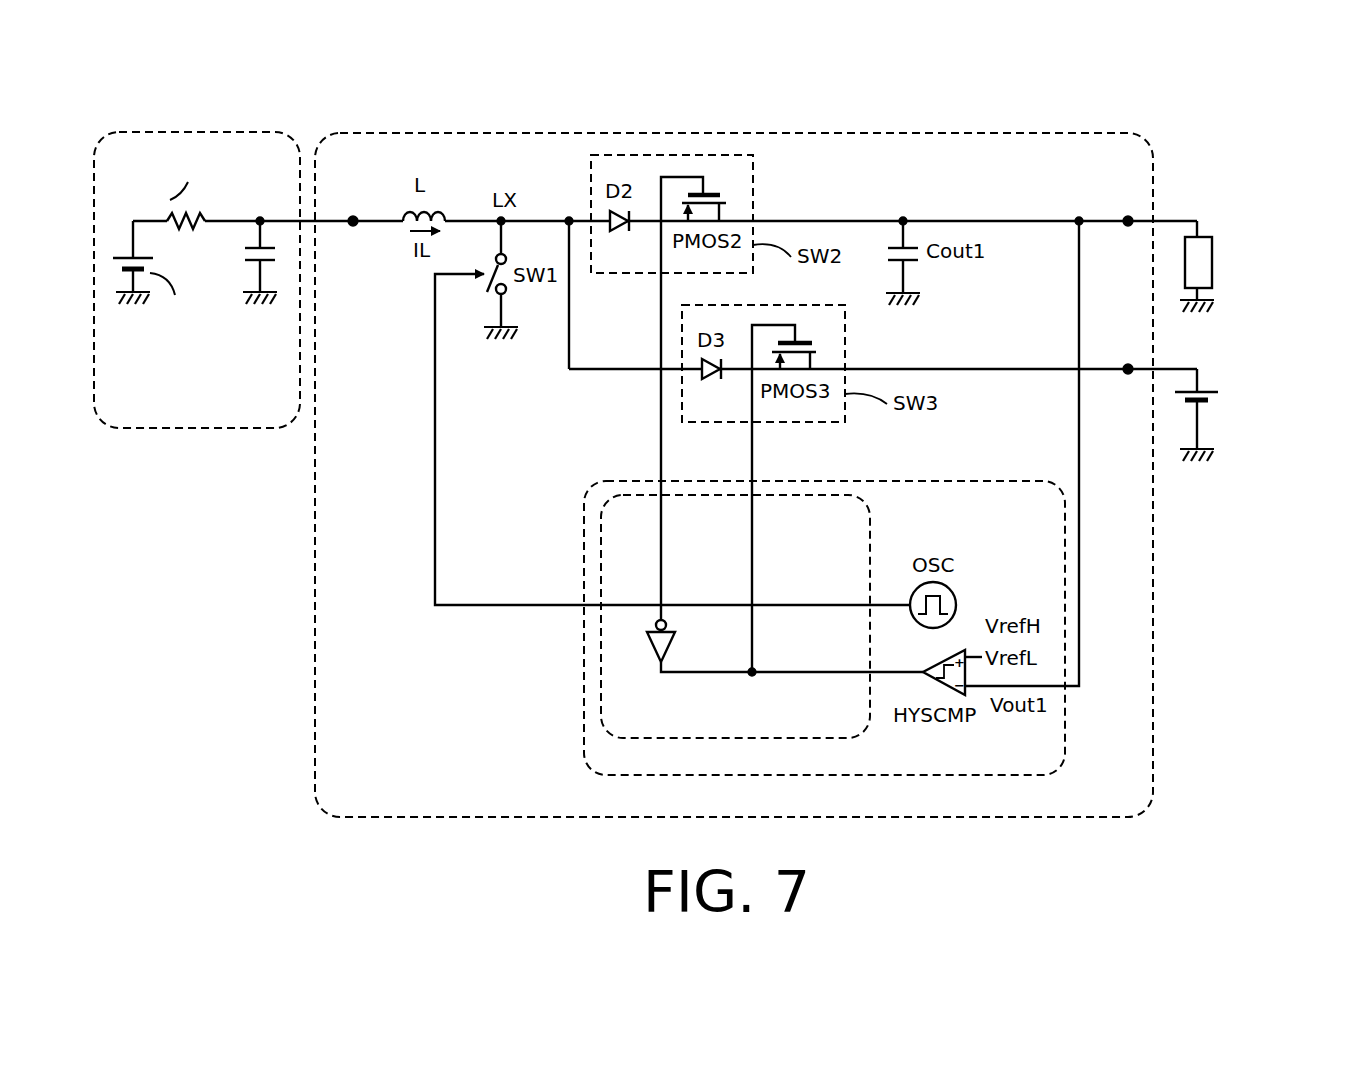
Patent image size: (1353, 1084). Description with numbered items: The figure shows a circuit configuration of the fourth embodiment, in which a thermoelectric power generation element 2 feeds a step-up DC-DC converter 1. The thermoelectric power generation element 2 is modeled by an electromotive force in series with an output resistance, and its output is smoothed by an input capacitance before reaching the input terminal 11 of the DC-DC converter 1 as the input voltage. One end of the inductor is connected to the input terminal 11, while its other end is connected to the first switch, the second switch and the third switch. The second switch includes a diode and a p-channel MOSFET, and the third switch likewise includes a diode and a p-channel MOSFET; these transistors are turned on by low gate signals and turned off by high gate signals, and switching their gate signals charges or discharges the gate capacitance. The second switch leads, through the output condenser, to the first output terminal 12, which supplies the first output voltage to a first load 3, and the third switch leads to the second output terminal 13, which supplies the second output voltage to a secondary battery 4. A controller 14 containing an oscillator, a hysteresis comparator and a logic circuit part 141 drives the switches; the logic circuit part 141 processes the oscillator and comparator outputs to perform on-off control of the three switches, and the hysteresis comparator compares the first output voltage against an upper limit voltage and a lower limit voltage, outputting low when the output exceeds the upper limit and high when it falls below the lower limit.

The DC-DC converter 1 is at (791, 133).
The thermoelectric power generation element 2 is at (190, 132).
The first load 3 is at (1212, 253).
The secondary battery 4 is at (1214, 398).
The input terminal 11 is at (352, 214).
The first output terminal 12 is at (1127, 214).
The second output terminal 13 is at (1127, 362).
The controller 14 is at (584, 735).
The logic circuit part 141 is at (713, 742).